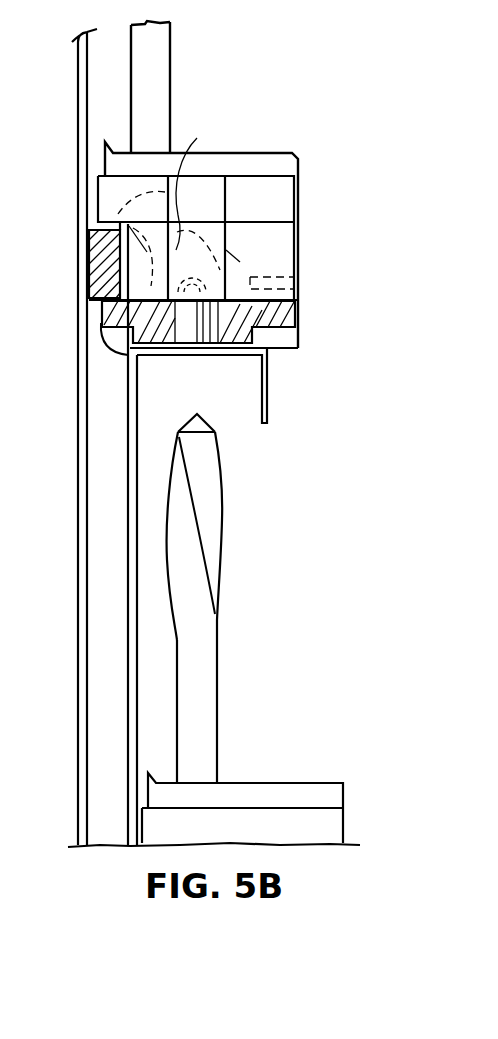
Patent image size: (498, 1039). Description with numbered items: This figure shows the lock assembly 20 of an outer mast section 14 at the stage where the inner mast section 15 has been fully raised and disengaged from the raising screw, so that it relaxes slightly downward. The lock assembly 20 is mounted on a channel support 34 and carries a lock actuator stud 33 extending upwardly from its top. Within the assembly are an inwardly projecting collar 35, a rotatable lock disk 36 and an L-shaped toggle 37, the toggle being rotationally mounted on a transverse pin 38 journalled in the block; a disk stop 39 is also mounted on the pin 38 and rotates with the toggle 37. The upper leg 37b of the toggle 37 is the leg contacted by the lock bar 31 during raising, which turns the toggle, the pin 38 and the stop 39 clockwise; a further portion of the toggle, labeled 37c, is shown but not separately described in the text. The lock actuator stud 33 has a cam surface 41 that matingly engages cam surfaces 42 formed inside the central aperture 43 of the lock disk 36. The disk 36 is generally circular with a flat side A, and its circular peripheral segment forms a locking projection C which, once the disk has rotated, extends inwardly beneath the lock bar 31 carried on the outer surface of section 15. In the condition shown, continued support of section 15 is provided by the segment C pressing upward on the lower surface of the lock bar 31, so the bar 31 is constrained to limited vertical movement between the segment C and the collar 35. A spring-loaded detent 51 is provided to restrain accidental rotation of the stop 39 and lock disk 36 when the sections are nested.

The mast section 14 is at (128, 589).
The inner mast section 15 is at (78, 553).
The lock assembly 20 is at (298, 197).
The locking bar 31 is at (90, 250).
The lock actuator stud 33 is at (172, 62).
The channel support 34 is at (270, 406).
The collar 35 is at (112, 193).
The lock disk 36 is at (291, 309).
The L-shaped toggle 37 is at (186, 222).
The upper leg of the toggle 37b is at (205, 185).
The hook 37c is at (108, 340).
The transverse pin 38 is at (240, 284).
The disk stop 39 is at (233, 272).
The cam surface 41 is at (200, 539).
The cam surfaces 42 is at (210, 334).
The central aperture 43 is at (185, 334).
The spring-loaded detent 51 is at (295, 279).
The flat side A is at (288, 321).
The locking projection C is at (103, 312).